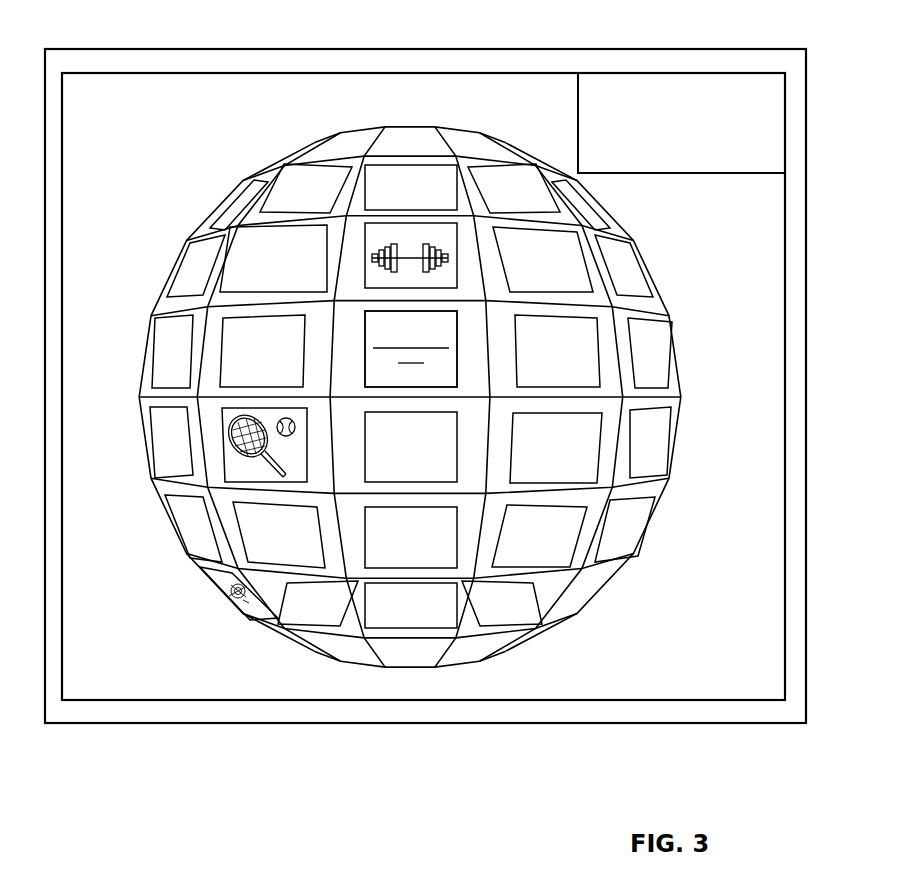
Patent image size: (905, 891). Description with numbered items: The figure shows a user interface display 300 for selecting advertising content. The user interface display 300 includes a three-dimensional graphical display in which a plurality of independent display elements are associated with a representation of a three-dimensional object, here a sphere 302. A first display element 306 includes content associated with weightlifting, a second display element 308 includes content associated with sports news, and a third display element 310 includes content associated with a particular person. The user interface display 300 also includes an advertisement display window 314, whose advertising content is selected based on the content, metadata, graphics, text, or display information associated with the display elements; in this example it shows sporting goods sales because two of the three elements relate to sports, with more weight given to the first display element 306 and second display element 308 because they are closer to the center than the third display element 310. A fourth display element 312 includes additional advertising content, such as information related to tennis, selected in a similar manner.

The user interface display 300 is at (163, 49).
The sphere 302 is at (173, 263).
The first display element 306 is at (363, 253).
The second display element 308 is at (460, 348).
The third display element 310 is at (222, 580).
The fourth display element 312 is at (225, 445).
The advertisement display window 314 is at (578, 122).